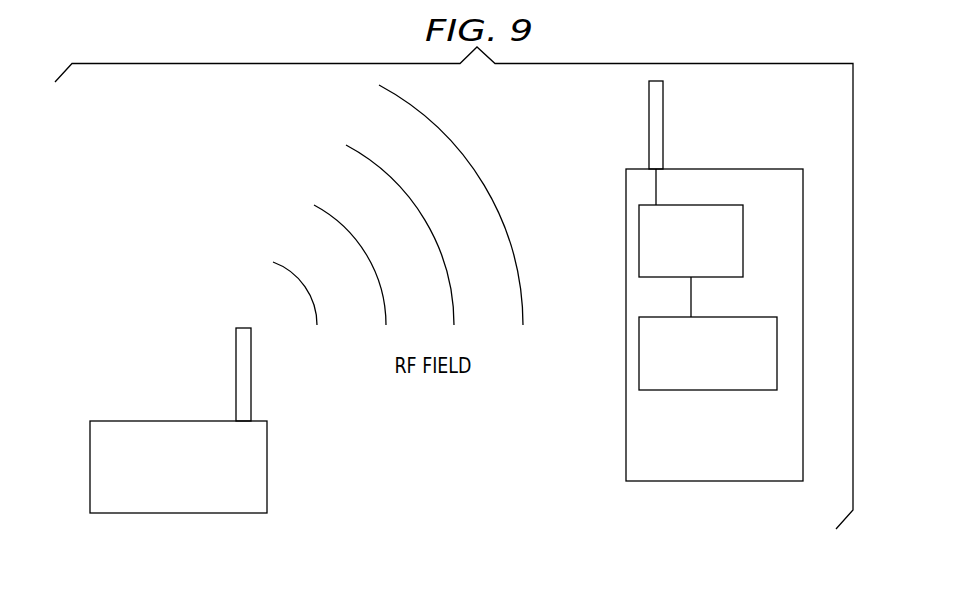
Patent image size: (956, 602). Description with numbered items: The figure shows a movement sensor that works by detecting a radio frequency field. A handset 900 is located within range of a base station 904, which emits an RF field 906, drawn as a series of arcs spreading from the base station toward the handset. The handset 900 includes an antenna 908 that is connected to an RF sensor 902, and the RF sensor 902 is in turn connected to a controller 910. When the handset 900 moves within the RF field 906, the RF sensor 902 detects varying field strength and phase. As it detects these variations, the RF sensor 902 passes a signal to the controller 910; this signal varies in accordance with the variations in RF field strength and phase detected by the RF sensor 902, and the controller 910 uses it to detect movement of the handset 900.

The handset 900 is at (770, 169).
The RF sensor 902 is at (745, 232).
The base station 904 is at (132, 421).
The RF field 906 is at (453, 141).
The antenna 908 is at (663, 122).
The controller 910 is at (700, 390).